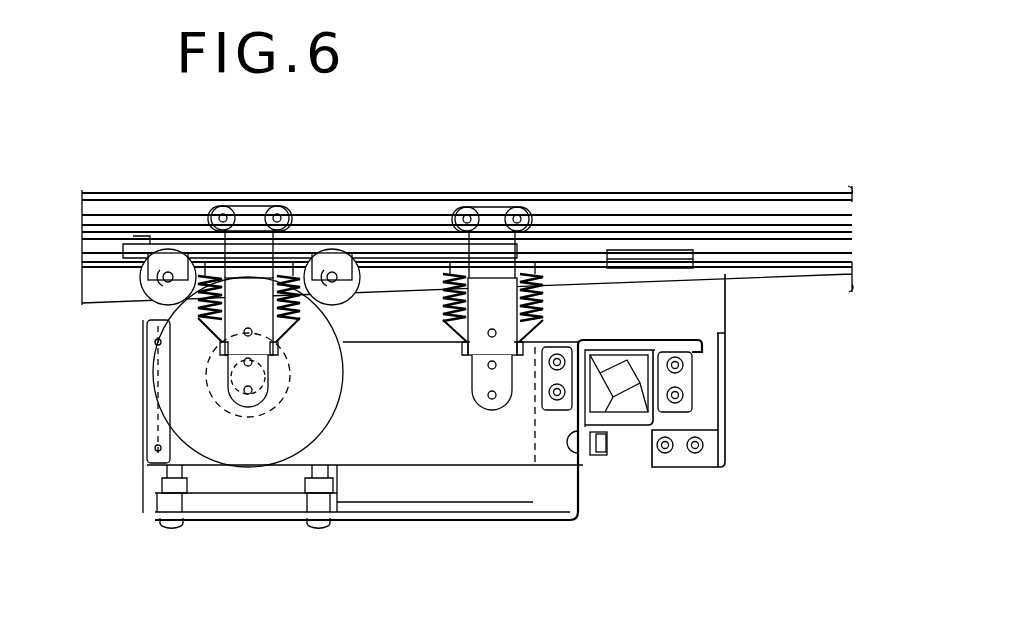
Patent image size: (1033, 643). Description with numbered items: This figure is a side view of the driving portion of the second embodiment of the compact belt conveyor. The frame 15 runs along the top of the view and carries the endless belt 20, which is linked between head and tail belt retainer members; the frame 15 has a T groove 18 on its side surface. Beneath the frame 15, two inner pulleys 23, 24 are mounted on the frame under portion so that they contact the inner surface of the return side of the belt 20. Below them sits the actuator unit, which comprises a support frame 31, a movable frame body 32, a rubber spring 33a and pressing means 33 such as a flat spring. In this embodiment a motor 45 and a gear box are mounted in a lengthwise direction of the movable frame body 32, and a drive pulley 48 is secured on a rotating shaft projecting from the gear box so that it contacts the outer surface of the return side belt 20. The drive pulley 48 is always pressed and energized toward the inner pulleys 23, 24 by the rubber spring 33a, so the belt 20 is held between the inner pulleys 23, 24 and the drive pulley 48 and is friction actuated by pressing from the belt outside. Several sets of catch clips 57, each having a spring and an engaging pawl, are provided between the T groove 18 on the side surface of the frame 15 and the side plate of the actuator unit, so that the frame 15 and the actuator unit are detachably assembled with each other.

The frame 15 is at (833, 203).
The T groove 18 is at (813, 227).
The endless belt 20 is at (728, 192).
The inner pulley 23 is at (360, 277).
The inner pulley 24 is at (133, 283).
The support frame 31 is at (727, 400).
The movable frame body 32 is at (506, 520).
The pressing means 33 is at (628, 433).
The rubber spring 33a is at (628, 362).
The motor 45 is at (397, 455).
The drive pulley 48 is at (182, 398).
The catch clip 57 is at (262, 207).